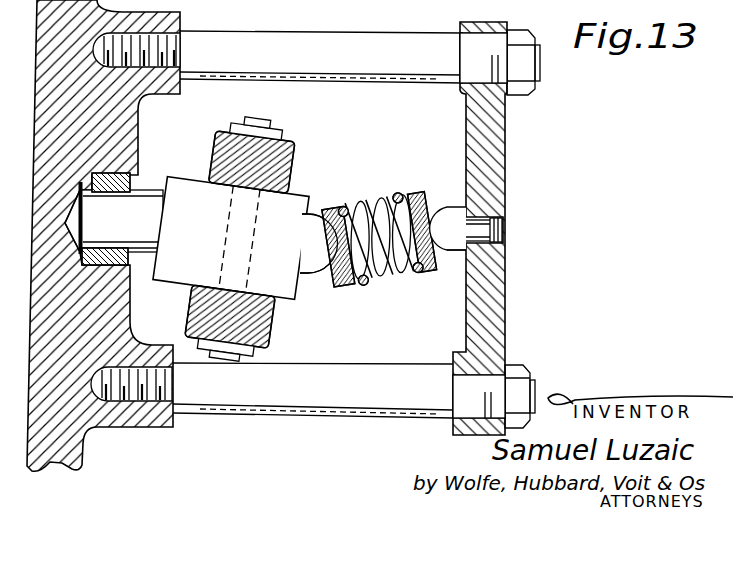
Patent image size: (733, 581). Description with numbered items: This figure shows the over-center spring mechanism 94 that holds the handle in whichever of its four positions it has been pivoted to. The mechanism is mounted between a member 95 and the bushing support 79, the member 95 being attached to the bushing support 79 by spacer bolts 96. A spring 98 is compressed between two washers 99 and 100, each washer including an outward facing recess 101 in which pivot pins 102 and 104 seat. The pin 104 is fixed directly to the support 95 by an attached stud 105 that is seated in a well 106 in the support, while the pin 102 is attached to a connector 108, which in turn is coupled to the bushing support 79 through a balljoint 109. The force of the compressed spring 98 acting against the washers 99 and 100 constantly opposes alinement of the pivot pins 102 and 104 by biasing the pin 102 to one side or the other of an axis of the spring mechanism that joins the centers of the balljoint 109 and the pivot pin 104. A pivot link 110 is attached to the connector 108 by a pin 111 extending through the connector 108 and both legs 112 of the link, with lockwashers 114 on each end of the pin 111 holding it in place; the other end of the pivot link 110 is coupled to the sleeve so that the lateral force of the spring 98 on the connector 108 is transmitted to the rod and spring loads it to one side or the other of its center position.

The bushing support 79 is at (132, 133).
The over-center spring mechanism 94 is at (337, 407).
The member 95 is at (498, 192).
The spacer bolts 96 is at (372, 37).
The spring 98 is at (402, 278).
The washer 99 is at (343, 290).
The washer 100 is at (417, 193).
The outward facing recess 101 is at (328, 271).
The pivot pin 102 is at (318, 241).
The pivot pin 104 is at (448, 248).
The stud 105 is at (503, 237).
The well 106 is at (502, 220).
The connector 108 is at (292, 197).
The balljoint 109 is at (132, 192).
The pivot link 110 is at (273, 332).
The pin 111 is at (268, 118).
The legs 112 is at (293, 147).
The lockwashers 114 is at (273, 128).